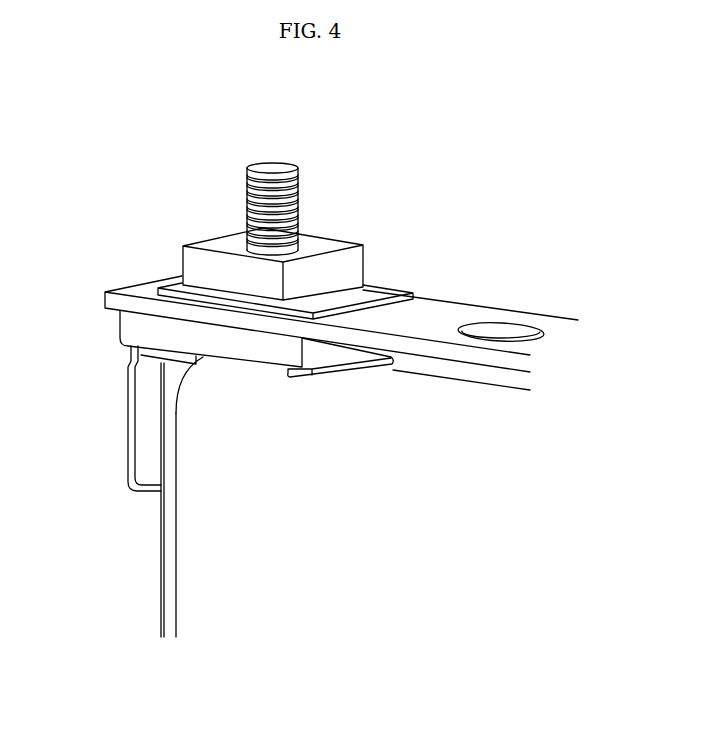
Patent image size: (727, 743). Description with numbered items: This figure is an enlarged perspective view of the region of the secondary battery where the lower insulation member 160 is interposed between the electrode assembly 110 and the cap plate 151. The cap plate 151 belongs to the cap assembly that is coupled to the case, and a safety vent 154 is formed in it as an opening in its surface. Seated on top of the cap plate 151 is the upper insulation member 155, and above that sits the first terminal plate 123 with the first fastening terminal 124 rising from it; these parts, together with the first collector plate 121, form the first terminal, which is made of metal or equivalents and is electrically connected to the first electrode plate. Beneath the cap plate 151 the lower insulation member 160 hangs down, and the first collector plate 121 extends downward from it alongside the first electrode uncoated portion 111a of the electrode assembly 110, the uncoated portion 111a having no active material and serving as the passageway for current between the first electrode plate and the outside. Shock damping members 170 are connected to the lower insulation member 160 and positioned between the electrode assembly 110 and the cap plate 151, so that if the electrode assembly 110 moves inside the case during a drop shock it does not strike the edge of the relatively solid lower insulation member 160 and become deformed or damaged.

The electrode assembly 110 is at (204, 574).
The first electrode uncoated portion 111a is at (172, 529).
The first collector plate 121 is at (148, 412).
The first terminal plate 123 is at (345, 239).
The first fastening terminal 124 is at (238, 194).
The cap plate 151 is at (457, 315).
The safety vent 154 is at (509, 336).
The upper insulation member 155 is at (383, 291).
The lower insulation member 160 is at (119, 329).
The shock damping members 170 is at (334, 369).